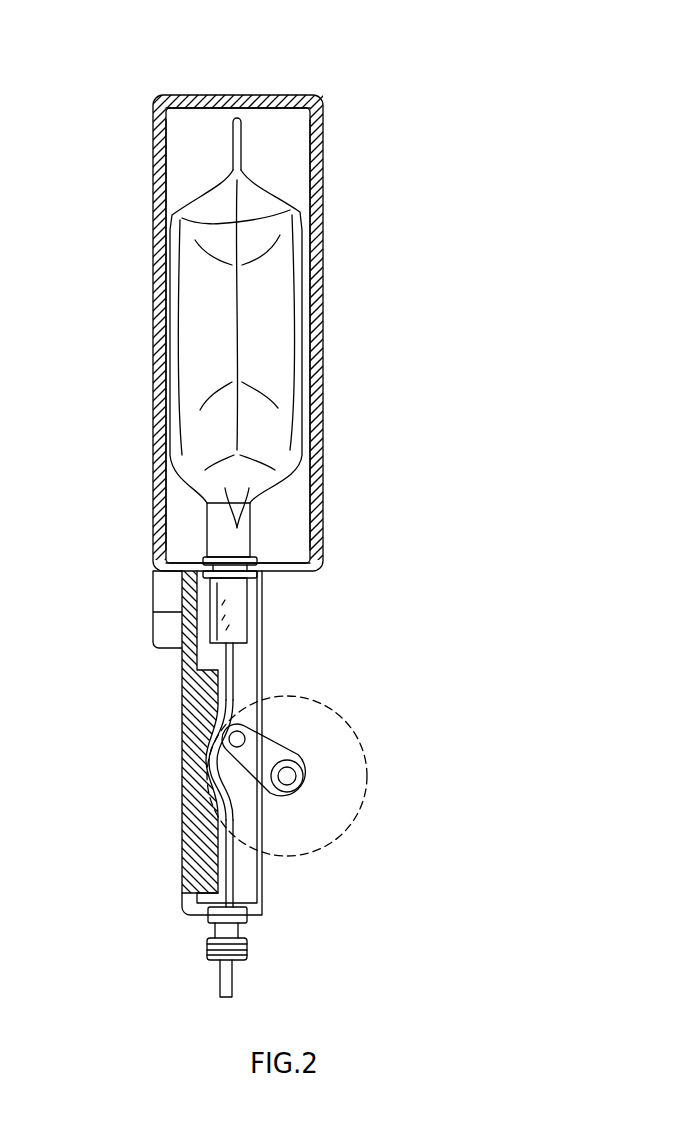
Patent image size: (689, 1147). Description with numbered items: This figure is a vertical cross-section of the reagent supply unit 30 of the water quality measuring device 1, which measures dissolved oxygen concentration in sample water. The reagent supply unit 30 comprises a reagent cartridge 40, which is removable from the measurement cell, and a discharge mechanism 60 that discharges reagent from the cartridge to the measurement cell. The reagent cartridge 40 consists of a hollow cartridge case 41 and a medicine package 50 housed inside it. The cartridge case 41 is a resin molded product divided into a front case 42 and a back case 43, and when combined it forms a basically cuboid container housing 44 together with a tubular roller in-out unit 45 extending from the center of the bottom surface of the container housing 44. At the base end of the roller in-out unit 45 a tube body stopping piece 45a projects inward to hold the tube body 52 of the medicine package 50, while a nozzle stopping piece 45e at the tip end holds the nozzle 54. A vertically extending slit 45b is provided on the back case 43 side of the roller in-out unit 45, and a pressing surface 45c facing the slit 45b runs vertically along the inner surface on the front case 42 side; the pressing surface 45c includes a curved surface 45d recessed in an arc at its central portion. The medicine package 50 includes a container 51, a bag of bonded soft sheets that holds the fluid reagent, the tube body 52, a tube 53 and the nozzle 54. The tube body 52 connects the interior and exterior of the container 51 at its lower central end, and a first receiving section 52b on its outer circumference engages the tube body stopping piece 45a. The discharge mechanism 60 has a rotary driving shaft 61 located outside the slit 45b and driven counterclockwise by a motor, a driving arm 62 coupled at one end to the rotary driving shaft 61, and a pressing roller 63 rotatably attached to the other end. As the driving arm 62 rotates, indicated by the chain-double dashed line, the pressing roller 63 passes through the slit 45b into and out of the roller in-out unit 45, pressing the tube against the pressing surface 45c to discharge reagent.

The water quality measuring device 1 is at (380, 524).
The reagent supply unit 30 is at (335, 140).
The reagent cartridge 40 is at (325, 353).
The cartridge case 41 is at (288, 95).
The front case 42 is at (153, 310).
The back case 43 is at (323, 163).
The container housing 44 is at (178, 157).
The roller in-out unit 45 is at (183, 698).
The tube body stopping piece 45a is at (240, 550).
The slit 45b is at (240, 665).
The pressing surface 45c is at (192, 730).
The curved surface 45d is at (188, 817).
The nozzle stopping piece 45e is at (238, 932).
The medicine package 50 is at (268, 258).
The container 51 is at (262, 312).
The tube body 52 is at (238, 603).
The first receiving section 52b is at (203, 560).
The tube 53 is at (227, 877).
The nozzle 54 is at (223, 975).
The discharge mechanism 60 is at (270, 808).
The rotary driving shaft 61 is at (293, 777).
The driving arm 62 is at (278, 743).
The pressing roller 63 is at (240, 722).